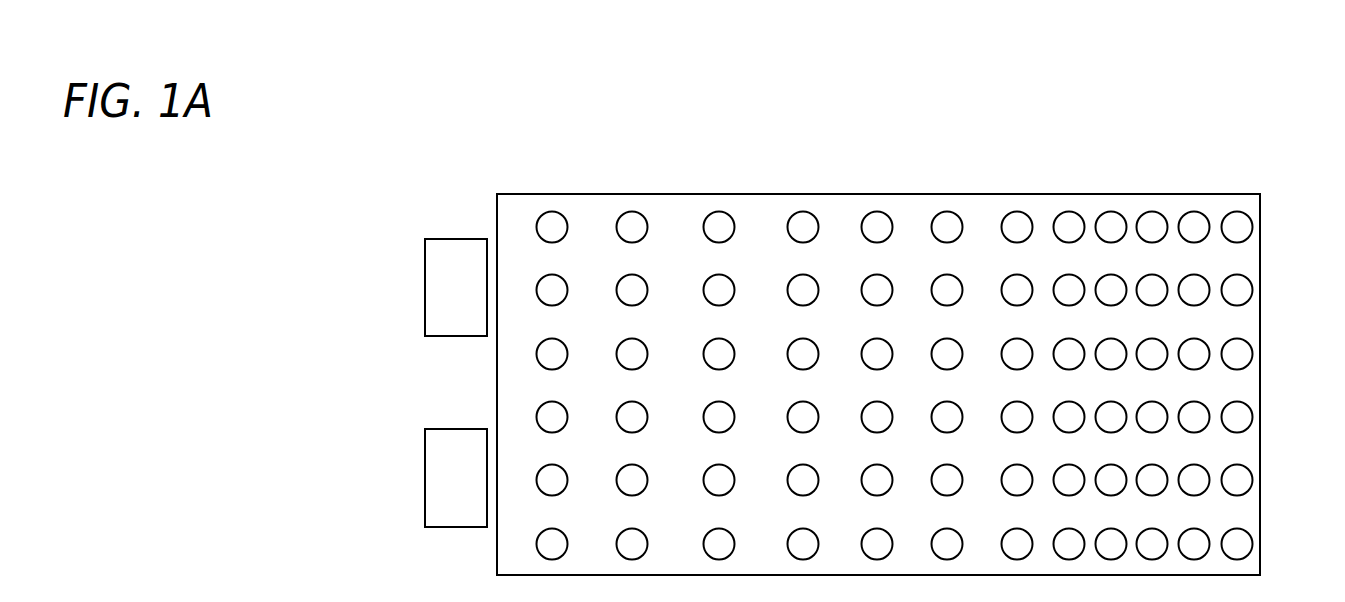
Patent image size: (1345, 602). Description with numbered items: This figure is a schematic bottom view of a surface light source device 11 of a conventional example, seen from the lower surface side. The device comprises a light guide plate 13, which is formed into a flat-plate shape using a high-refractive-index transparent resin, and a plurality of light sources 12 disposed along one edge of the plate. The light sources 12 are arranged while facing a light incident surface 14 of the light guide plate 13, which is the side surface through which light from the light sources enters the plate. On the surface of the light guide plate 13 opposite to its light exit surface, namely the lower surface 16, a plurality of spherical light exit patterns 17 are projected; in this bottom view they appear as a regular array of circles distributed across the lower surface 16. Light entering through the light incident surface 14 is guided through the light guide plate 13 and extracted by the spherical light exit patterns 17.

The surface light source device 11 is at (1342, 160).
The light sources 12 is at (438, 278).
The light guide plate 13 is at (1039, 258).
The light incident surface 14 is at (497, 374).
The lower surface 16 is at (878, 384).
The spherical light exit patterns 17 is at (720, 224).